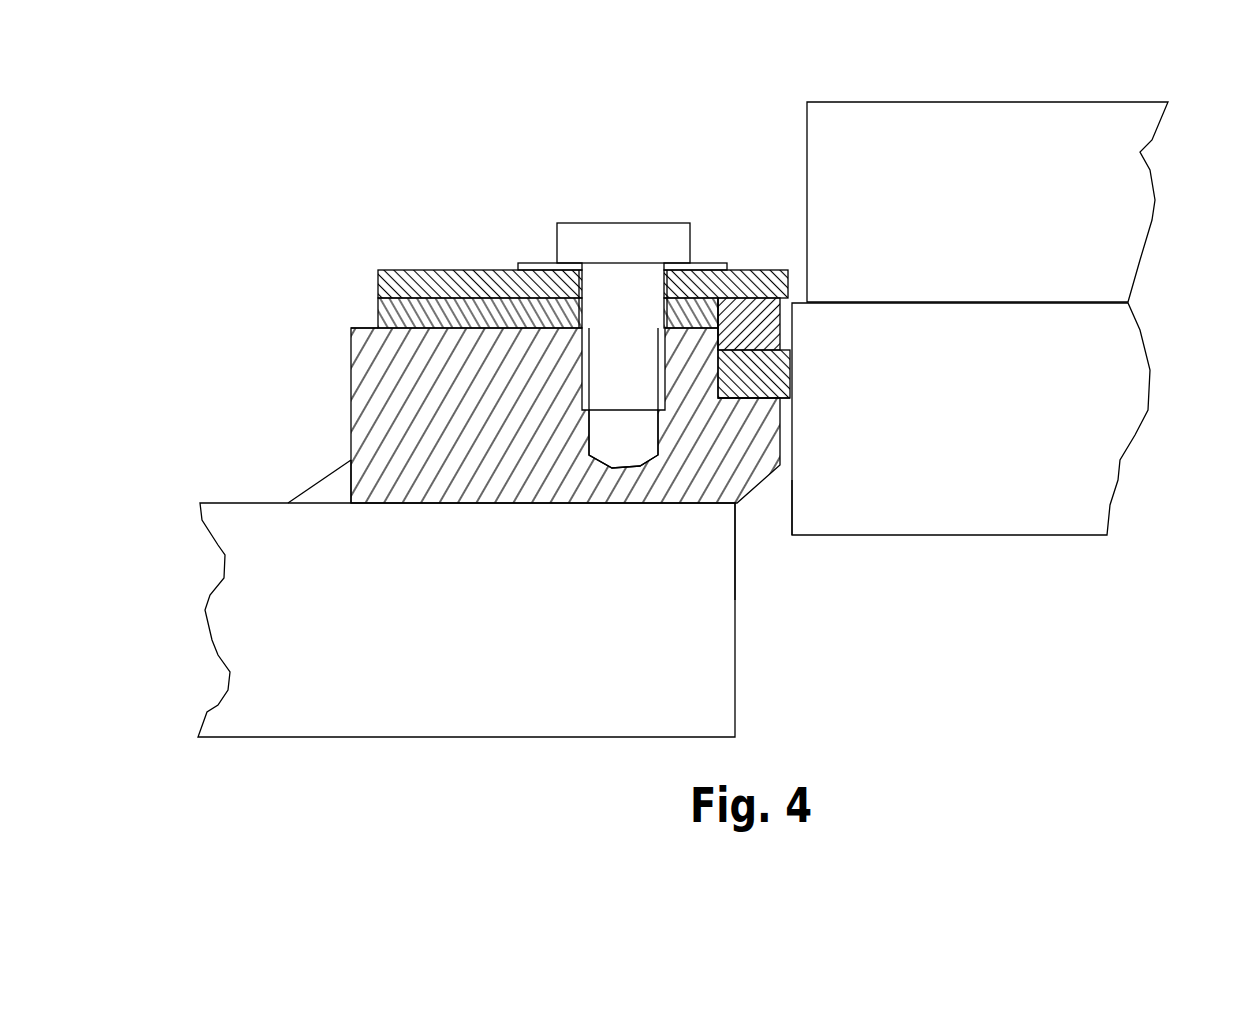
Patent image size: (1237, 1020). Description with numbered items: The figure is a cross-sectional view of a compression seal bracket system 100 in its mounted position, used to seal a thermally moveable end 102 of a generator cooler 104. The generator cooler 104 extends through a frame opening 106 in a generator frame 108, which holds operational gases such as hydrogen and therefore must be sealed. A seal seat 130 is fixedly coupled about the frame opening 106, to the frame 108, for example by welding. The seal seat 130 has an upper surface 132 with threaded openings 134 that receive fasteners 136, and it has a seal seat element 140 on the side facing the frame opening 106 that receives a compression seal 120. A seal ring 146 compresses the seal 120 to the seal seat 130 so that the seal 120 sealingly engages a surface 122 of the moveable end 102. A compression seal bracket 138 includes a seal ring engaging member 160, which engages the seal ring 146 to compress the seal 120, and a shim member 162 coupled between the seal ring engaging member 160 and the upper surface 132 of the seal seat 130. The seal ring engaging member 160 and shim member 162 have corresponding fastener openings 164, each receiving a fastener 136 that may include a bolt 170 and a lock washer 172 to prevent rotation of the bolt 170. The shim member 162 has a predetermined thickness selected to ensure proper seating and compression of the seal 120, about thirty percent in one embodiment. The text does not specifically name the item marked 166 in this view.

The compression seal bracket system 100 is at (445, 142).
The thermally moveable end 102 is at (1117, 436).
The generator cooler 104 is at (838, 120).
The frame opening 106 is at (737, 540).
The generator frame 108 is at (571, 666).
The compression seal 120 is at (793, 375).
The surface of moveable end 122 is at (790, 490).
The seal seat 130 is at (427, 402).
The upper surface 132 is at (370, 328).
The threaded opening 134 is at (583, 443).
The fastener 136 is at (630, 245).
The compression seal bracket 138 is at (392, 252).
The seal seat element 140 is at (744, 400).
The seal ring 146 is at (757, 324).
The seal ring engaging member 160 is at (770, 270).
The shim member 162 is at (470, 313).
The fastener opening 164 is at (579, 287).
The interface 166 is at (581, 312).
The bolt 170 is at (622, 365).
The lock washer 172 is at (704, 263).